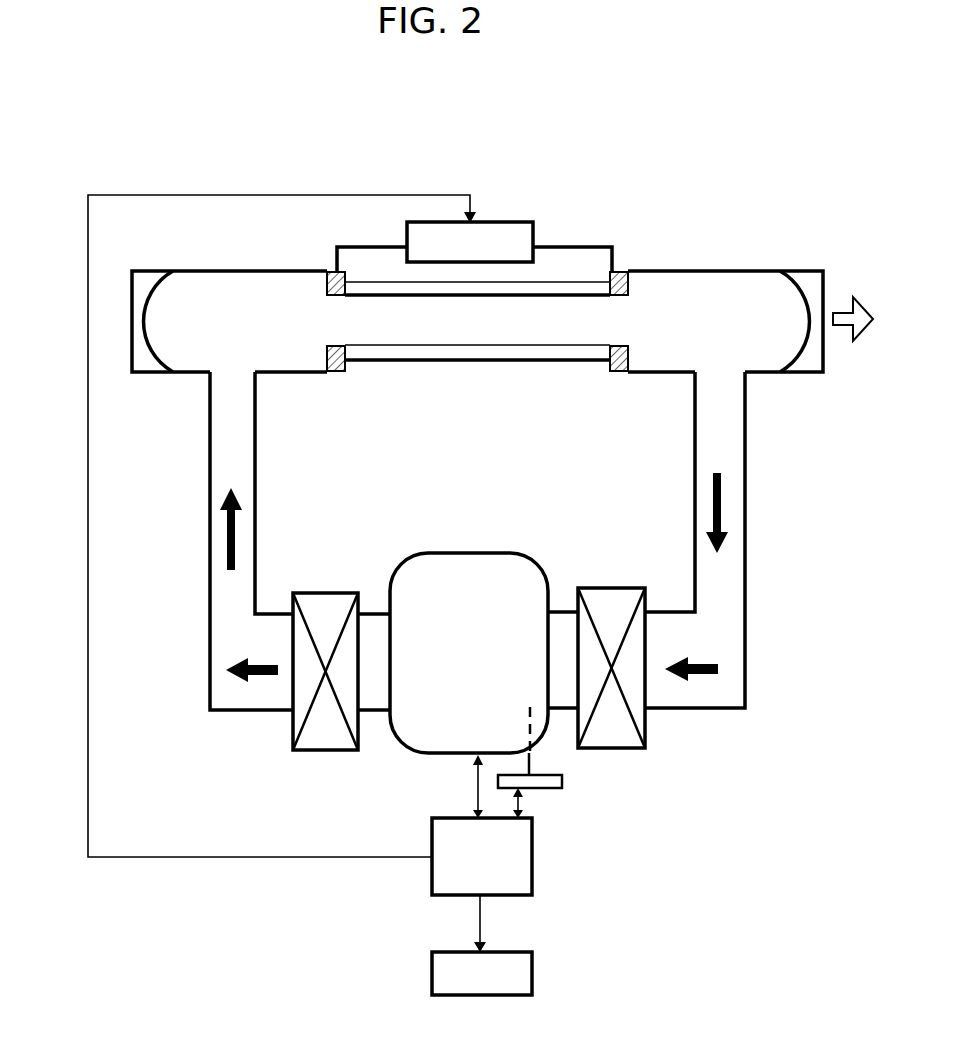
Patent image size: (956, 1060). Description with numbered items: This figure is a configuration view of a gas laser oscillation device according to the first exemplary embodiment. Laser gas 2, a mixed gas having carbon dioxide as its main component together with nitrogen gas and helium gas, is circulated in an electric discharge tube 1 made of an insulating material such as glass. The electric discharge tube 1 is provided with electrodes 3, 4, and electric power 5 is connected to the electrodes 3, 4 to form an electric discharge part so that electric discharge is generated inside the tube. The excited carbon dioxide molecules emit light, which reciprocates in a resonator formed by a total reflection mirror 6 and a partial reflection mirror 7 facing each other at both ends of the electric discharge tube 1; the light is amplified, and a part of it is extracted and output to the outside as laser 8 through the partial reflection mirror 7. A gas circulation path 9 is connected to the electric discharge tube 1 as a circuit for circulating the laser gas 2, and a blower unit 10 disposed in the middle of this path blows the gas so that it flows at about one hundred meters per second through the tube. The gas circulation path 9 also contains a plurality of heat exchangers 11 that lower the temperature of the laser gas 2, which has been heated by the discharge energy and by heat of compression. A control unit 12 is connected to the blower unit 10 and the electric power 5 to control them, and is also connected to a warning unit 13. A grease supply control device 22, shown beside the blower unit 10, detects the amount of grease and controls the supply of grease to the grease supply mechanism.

The electric discharge tube 1 is at (402, 352).
The laser gas 2 is at (248, 667).
The electrode 3 is at (331, 346).
The electrode 4 is at (627, 345).
The electric power 5 is at (510, 222).
The total reflection mirror 6 is at (150, 372).
The partial reflection mirror 7 is at (797, 287).
The laser 8 is at (845, 313).
The gas circulation path 9 is at (257, 463).
The blower unit 10 is at (425, 757).
The heat exchanger 11 is at (326, 740).
The control unit 12 is at (523, 863).
The warning unit 13 is at (523, 968).
The grease supply control device 22 is at (558, 782).